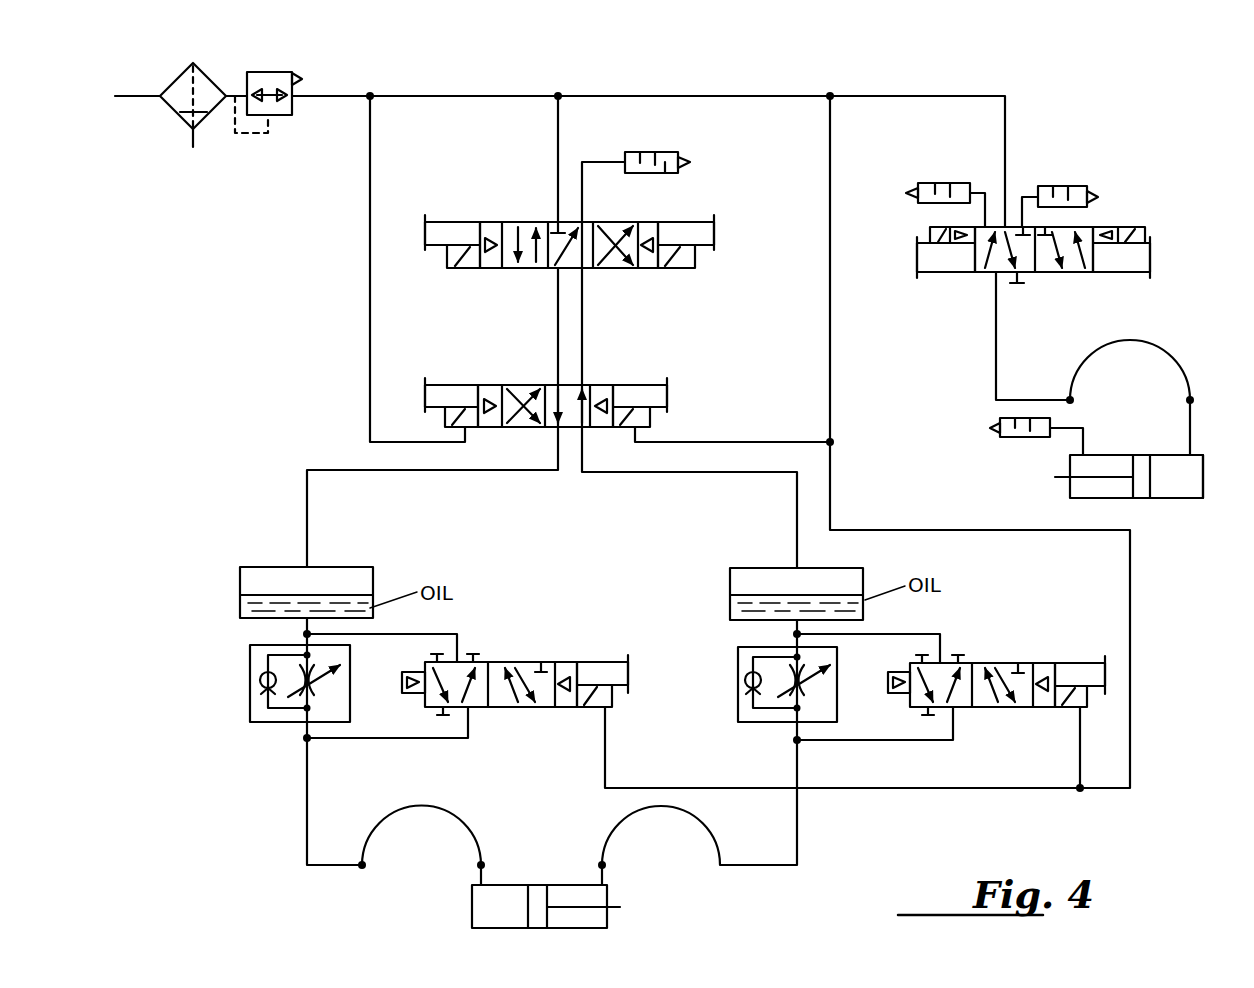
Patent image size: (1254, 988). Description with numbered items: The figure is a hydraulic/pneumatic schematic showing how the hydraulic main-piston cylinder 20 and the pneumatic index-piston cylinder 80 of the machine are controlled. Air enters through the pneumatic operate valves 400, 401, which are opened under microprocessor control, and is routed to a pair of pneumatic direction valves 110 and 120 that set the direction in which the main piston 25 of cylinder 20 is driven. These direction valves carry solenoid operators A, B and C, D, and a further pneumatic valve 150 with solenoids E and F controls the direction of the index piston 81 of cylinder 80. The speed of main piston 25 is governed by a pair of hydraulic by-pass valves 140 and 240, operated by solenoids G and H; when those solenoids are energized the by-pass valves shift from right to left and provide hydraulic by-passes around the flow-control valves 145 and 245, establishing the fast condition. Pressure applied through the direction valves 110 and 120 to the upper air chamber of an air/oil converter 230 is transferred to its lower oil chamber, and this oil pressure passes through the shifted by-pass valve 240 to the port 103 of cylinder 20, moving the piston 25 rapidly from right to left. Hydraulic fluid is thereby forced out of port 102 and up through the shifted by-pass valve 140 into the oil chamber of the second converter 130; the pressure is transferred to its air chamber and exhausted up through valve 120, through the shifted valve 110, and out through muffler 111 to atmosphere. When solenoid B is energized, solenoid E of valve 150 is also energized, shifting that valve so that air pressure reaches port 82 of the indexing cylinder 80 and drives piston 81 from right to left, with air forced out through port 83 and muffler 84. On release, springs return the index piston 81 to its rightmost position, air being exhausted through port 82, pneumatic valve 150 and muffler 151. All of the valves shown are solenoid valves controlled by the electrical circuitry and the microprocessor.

The pneumatic operate valve 400 is at (183, 100).
The pneumatic operate valve 401 is at (280, 108).
The muffler 111 is at (660, 152).
The pneumatic direction valve 110 is at (565, 265).
The pneumatic direction valve 120 is at (572, 376).
The pneumatic valve 150 is at (1012, 246).
The muffler 151 is at (1058, 188).
The pneumatic index-piston cylinder 80 is at (1088, 444).
The index piston 81 is at (1140, 465).
The port 82 is at (1195, 455).
The port 83 is at (1075, 450).
The muffler 84 is at (1005, 440).
The air/oil converter 130 is at (235, 586).
The flow-control valve 145 is at (245, 688).
The hydraulic by-pass valve 140 is at (515, 642).
The air/oil converter 230 is at (725, 584).
The flow-control valve 245 is at (735, 698).
The hydraulic by-pass valve 240 is at (996, 641).
The port 102 is at (472, 867).
The port 103 is at (608, 868).
The main piston 25 is at (538, 890).
The hydraulic main-piston cylinder 20 is at (539, 890).
The solenoid A is at (443, 228).
The solenoid B is at (690, 230).
The solenoid C is at (437, 393).
The solenoid D is at (655, 398).
The solenoid E is at (925, 258).
The solenoid F is at (1127, 263).
The solenoid G is at (595, 672).
The solenoid H is at (1070, 672).